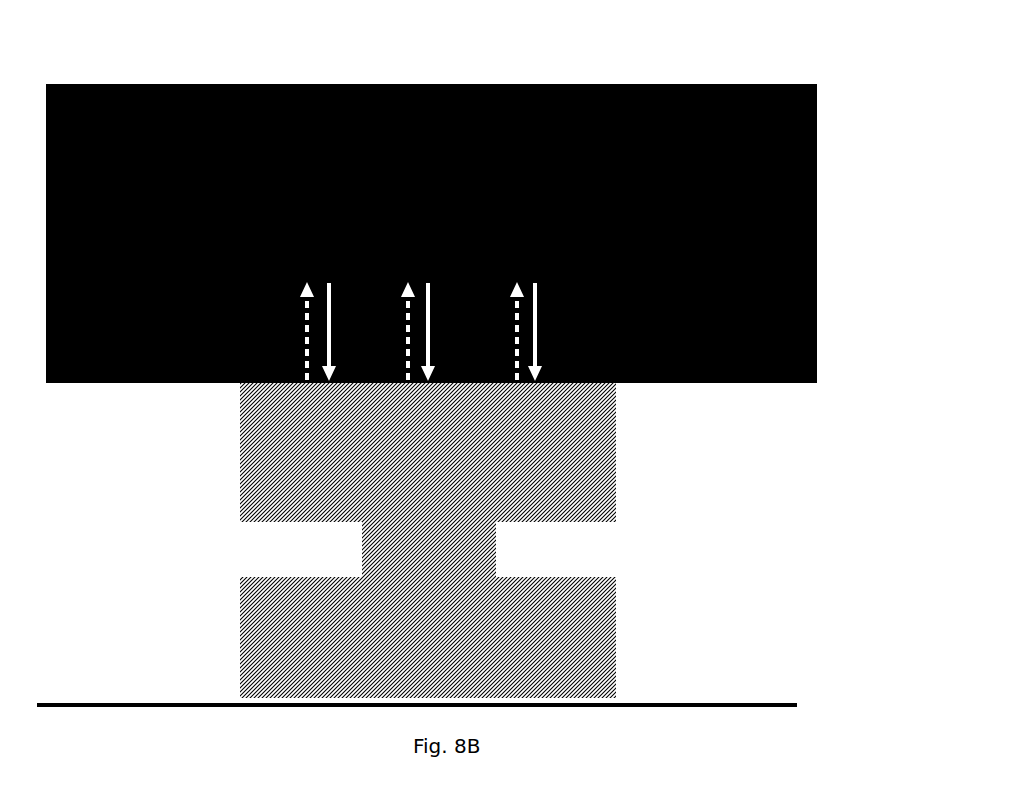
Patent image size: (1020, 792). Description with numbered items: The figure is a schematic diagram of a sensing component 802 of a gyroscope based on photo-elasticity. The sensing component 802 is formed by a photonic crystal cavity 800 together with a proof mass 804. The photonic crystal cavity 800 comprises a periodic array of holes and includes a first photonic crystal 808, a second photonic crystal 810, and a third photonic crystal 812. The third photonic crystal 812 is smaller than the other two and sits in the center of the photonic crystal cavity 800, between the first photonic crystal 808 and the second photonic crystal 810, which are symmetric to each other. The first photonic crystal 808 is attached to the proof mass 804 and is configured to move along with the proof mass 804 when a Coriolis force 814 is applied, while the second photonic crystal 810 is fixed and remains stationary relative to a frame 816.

The photonic crystal cavity 800 is at (435, 540).
The sensing component 802 is at (469, 349).
The proof mass 804 is at (753, 383).
The first photonic crystal 808 is at (615, 485).
The second photonic crystal 810 is at (615, 614).
The third photonic crystal 812 is at (496, 555).
The Coriolis force 814 is at (428, 283).
The frame 816 is at (755, 705).